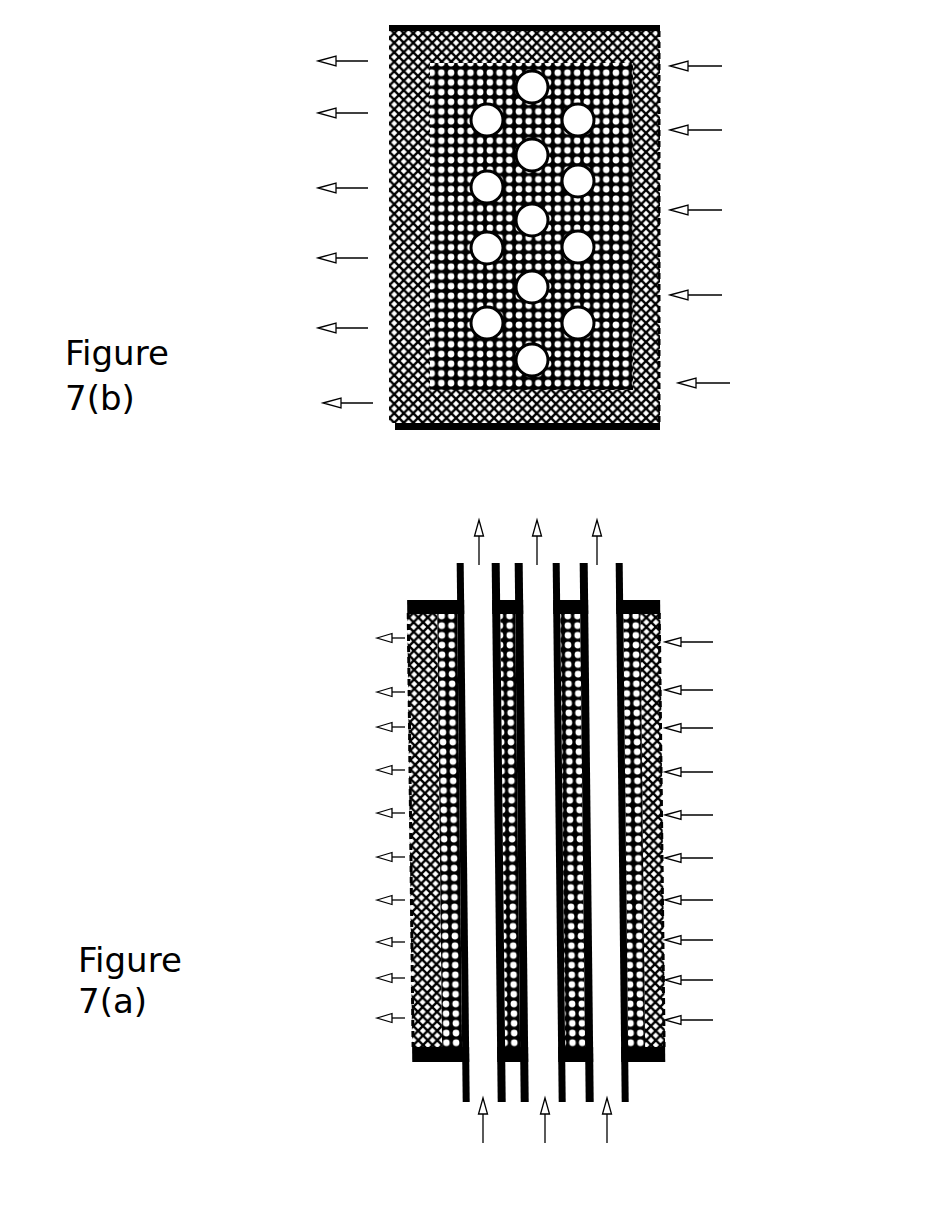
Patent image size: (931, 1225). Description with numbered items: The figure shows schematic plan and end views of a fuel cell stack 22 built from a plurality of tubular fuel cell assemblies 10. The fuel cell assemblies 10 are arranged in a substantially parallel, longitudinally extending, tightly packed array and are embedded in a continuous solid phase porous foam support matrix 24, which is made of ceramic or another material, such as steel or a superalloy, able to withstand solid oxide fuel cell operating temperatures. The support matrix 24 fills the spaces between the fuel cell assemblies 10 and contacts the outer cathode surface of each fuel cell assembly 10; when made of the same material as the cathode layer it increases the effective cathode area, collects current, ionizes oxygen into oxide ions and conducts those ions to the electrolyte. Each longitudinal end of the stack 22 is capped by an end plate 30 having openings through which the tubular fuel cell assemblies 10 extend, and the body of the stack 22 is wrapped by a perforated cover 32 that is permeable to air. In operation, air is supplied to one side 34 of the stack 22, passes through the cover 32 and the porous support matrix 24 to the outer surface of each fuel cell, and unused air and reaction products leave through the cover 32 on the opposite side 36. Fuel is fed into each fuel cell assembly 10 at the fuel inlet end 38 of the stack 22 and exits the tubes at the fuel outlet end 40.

In FIG. 7B, the fuel cell assembly 10 is at (593, 342).
In FIG. 7A, the fuel cell assembly 10 is at (617, 565).
In FIG. 7A, the stack 22 is at (432, 1100).
In FIG. 7B, the porous foam support matrix 24 is at (458, 383).
In FIG. 7A, the porous foam support matrix 24 is at (450, 700).
In FIG. 7A, the end plates 30 is at (423, 1065).
In FIG. 7B, the perforated cover 32 is at (418, 383).
In FIG. 7A, the perforated cover 32 is at (420, 998).
In FIG. 7B, the one side of the stack 34 is at (720, 224).
In FIG. 7A, the one side of the stack 34 is at (715, 831).
In FIG. 7B, the opposite side of the stack 36 is at (324, 232).
In FIG. 7A, the opposite side of the stack 36 is at (366, 828).
In FIG. 7A, the fuel inlet end 38 is at (543, 1149).
In FIG. 7A, the fuel outlet end 40 is at (532, 524).